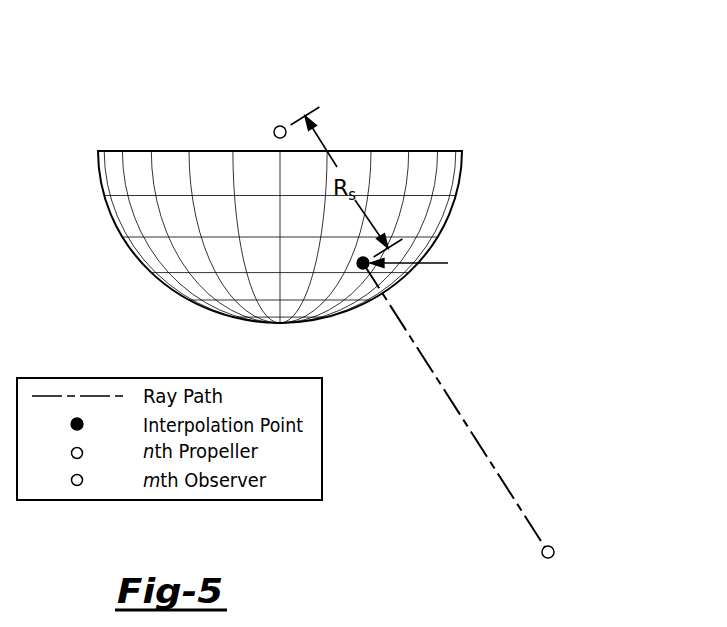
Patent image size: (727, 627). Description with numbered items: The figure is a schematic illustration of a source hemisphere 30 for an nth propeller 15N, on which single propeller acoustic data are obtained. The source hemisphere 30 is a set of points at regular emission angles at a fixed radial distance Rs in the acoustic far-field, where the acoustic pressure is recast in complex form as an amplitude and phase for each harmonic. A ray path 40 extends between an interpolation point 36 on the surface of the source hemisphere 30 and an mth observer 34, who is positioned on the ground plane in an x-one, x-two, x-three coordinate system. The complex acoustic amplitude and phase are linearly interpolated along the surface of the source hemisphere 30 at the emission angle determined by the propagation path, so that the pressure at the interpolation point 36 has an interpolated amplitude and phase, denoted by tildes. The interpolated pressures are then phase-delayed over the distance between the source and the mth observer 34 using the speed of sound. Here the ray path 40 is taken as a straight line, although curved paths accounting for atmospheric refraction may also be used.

The nth propeller 15N is at (281, 126).
The source hemisphere 30 is at (497, 175).
The mth observer 34 is at (554, 551).
The interpolation point 36 is at (359, 269).
The ray path 40 is at (482, 443).